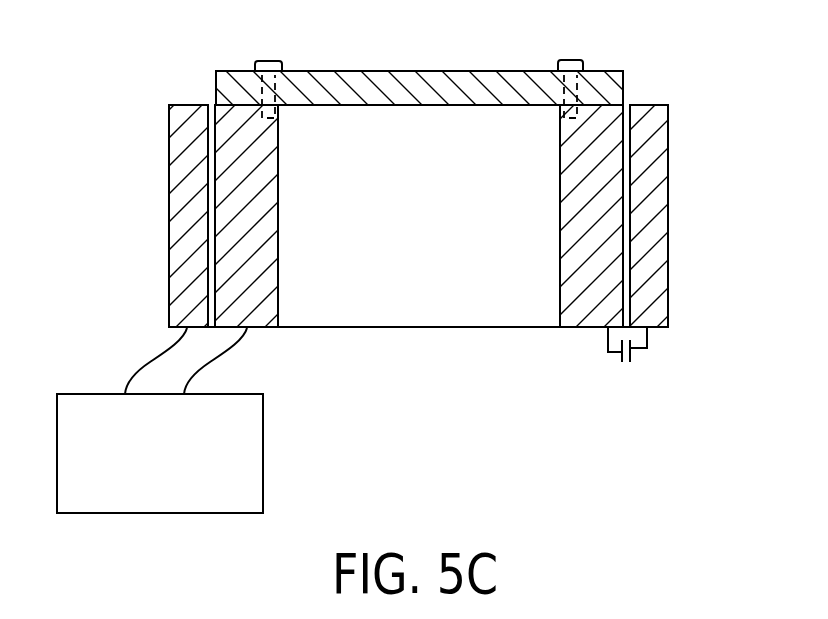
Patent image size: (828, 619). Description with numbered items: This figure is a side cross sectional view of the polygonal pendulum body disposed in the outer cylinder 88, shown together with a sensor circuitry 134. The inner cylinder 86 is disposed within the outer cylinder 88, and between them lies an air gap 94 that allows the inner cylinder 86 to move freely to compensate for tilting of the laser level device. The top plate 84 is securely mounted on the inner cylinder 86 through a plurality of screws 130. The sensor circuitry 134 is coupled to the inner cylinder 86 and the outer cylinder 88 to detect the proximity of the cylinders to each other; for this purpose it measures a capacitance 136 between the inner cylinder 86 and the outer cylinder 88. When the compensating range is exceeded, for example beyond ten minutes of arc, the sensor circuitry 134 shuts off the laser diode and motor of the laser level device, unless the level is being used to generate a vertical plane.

The top plate 84 is at (425, 71).
The inner cylinder 86 is at (263, 252).
The outer cylinder 88 is at (188, 215).
The air gap 94 is at (628, 104).
The screws 130 is at (570, 60).
The sensor circuitry 134 is at (263, 473).
The capacitance 136 is at (647, 352).